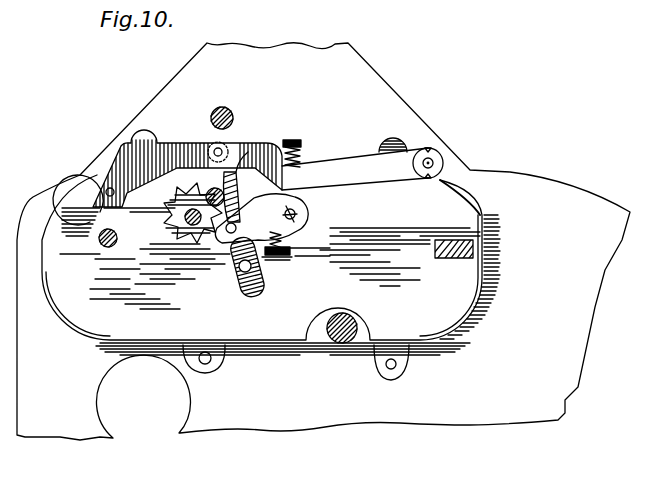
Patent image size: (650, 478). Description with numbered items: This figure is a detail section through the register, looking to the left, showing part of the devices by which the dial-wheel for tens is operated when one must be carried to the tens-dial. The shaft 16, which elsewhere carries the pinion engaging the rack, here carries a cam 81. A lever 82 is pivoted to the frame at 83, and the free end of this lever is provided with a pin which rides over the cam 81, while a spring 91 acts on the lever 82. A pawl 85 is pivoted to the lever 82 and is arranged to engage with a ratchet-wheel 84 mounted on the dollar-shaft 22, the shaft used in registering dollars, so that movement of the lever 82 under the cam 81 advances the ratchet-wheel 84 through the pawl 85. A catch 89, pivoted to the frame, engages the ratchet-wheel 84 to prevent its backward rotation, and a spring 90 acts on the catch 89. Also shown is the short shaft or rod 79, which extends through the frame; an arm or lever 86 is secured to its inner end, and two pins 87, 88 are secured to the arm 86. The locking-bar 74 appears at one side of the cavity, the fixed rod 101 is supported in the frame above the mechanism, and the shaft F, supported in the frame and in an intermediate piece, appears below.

The shaft 16 is at (103, 247).
The dollar-shaft 22 is at (185, 220).
The locking-bar 74 is at (448, 260).
The short shaft 79 is at (240, 270).
The cam 81 is at (117, 238).
The lever 82 is at (381, 176).
The pivot 83 is at (323, 241).
The ratchet-wheel 84 is at (184, 213).
The pawl 85 is at (249, 191).
The arm or lever 86 is at (238, 252).
The pin 87 is at (241, 199).
The pin 88 is at (208, 191).
The catch 89 is at (261, 218).
The spring 90 is at (291, 243).
The spring 91 is at (302, 146).
The fixed rod 101 is at (246, 112).
The shaft F is at (339, 344).